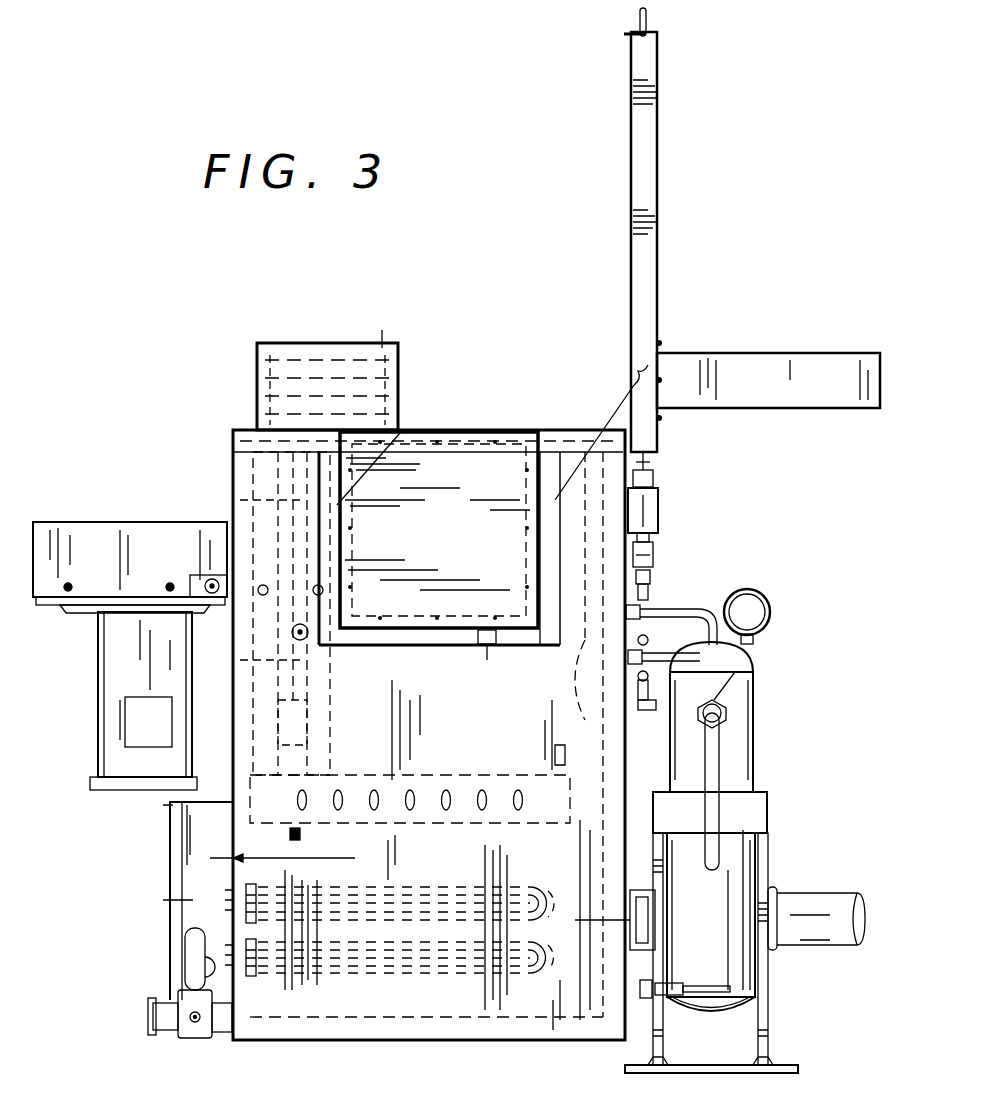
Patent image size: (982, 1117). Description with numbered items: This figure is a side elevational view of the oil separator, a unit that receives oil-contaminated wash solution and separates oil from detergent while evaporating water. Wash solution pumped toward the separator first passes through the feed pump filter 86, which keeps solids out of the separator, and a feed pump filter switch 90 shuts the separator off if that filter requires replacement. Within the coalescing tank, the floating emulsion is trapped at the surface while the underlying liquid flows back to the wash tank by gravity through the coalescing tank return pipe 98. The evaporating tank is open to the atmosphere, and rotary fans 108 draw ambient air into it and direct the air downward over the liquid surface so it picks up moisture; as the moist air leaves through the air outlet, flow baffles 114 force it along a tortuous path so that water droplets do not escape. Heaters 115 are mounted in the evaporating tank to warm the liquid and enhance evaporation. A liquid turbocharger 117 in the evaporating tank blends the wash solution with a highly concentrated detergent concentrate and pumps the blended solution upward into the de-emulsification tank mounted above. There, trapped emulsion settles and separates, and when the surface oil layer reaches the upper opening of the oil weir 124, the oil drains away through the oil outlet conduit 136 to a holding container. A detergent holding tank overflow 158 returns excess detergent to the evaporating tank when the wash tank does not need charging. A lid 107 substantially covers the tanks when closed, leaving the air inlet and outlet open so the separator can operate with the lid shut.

The feed pump filter 86 is at (733, 760).
The feed pump filter switch 90 is at (660, 512).
The coalescing tank return pipe 98 is at (815, 902).
The lid 107 is at (645, 178).
The rotary fans 108 is at (377, 388).
The flow baffles 114 is at (655, 470).
The heaters 115 is at (413, 940).
The liquid turbocharger 117 is at (97, 522).
The oil weir 124 is at (487, 663).
The oil outlet conduit 136 is at (673, 645).
The detergent holding tank overflow 158 is at (306, 638).